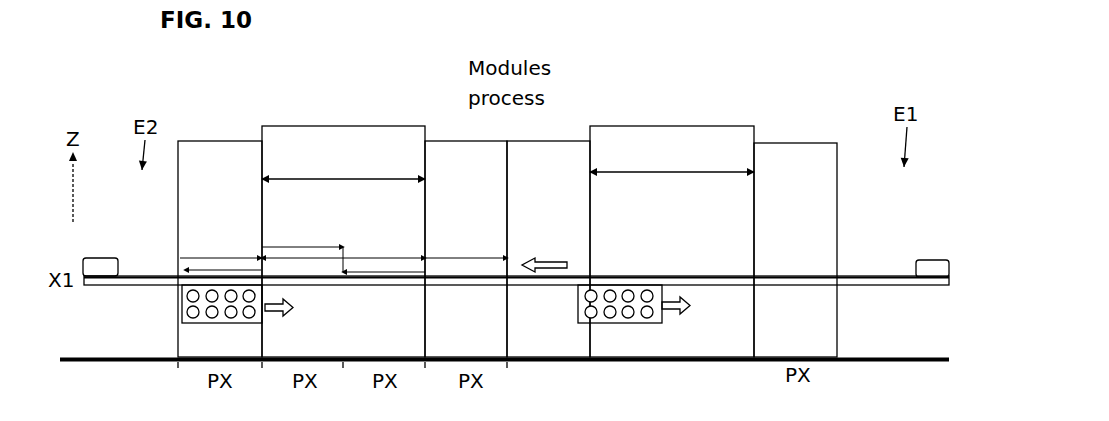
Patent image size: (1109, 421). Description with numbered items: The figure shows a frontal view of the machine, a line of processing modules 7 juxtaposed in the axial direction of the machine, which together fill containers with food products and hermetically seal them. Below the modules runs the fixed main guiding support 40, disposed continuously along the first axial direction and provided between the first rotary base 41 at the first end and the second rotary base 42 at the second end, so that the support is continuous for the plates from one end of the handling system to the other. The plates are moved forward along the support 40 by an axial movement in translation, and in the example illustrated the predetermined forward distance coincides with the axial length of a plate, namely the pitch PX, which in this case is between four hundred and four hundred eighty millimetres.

The processing modules 7 is at (776, 96).
The fixed main guiding support 40 is at (530, 289).
The first rotary base 41 is at (900, 272).
The second rotary base 42 is at (128, 268).